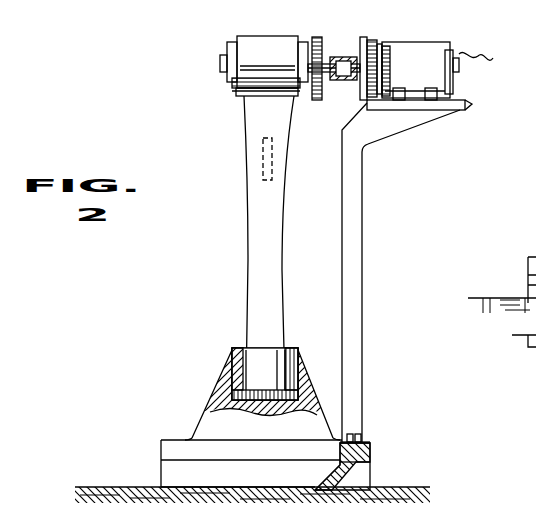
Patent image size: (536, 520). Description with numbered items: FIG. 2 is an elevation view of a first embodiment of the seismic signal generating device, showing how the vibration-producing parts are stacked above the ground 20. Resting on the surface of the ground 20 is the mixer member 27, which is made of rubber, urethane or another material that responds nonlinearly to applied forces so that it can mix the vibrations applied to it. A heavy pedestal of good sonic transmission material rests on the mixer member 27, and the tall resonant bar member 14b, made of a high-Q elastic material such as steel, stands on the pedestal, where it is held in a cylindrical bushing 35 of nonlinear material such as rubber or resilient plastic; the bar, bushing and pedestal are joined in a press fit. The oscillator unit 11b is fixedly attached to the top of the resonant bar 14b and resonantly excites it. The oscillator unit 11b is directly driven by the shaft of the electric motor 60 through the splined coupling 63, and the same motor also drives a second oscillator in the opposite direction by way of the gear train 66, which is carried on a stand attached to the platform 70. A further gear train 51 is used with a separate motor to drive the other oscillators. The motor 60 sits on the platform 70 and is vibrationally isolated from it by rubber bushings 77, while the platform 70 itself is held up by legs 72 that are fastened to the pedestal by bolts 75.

The oscillator unit 11b is at (270, 43).
The gear train 51 is at (318, 100).
The splined coupling 63 is at (345, 57).
The gear train 66 is at (377, 39).
The electric motor 60 is at (437, 71).
The rubber bushings 77 is at (466, 104).
The platform 70 is at (423, 112).
The legs 72 is at (363, 266).
The bolts 75 is at (358, 438).
The mixer member 27 is at (368, 470).
The resonant bar member 14b is at (248, 243).
The cylindrical bushings 35 is at (290, 348).
The ground 20 is at (405, 488).